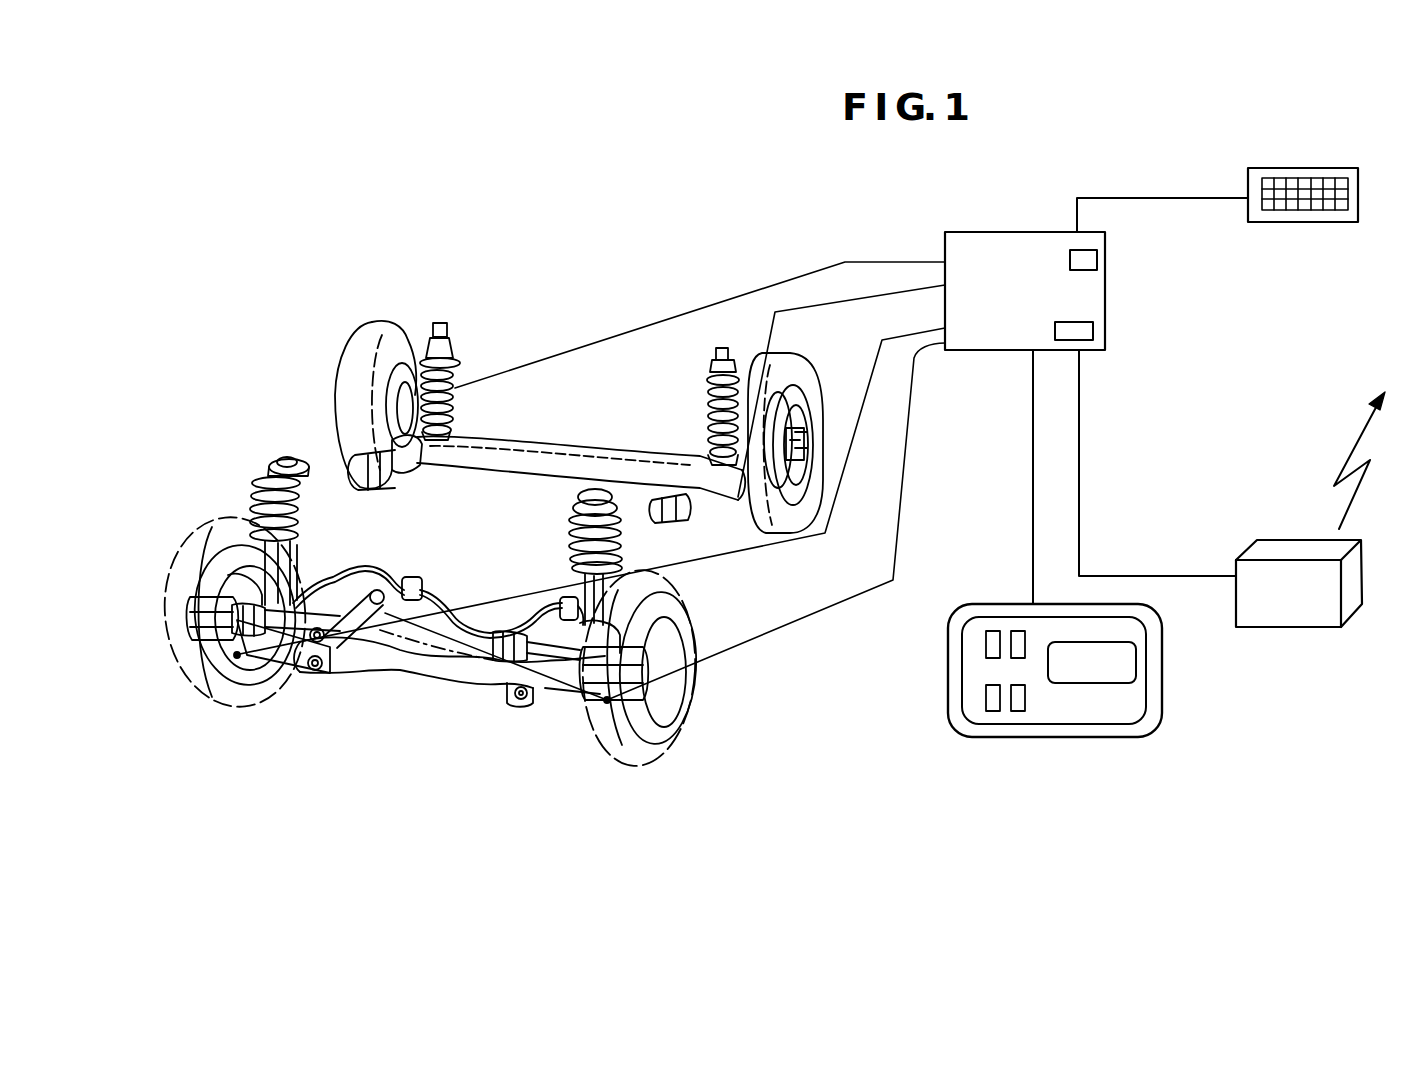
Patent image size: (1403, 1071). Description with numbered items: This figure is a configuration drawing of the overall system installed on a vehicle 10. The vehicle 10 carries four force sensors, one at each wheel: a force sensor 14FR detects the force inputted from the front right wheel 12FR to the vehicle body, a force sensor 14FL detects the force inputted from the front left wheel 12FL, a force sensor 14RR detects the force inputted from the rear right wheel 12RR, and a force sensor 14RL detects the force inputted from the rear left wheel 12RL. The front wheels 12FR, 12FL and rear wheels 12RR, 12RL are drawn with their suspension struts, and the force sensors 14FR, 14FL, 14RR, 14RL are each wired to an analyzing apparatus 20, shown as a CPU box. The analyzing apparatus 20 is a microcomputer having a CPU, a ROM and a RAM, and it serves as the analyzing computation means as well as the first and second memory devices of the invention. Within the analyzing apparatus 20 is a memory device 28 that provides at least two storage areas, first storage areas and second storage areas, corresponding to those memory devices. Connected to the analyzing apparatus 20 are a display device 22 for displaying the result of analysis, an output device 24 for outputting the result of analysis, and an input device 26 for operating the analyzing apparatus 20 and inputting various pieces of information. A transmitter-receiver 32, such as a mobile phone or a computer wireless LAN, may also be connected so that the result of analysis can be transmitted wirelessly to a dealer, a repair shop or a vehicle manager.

The vehicle 10 is at (524, 170).
The front right wheel 12FR is at (175, 680).
The front left wheel 12FL is at (622, 768).
The rear right wheel 12RR is at (336, 350).
The rear left wheel 12RL is at (858, 340).
The force sensor 14FR is at (237, 655).
The force sensor 14FL is at (578, 575).
The force sensor 14RR is at (400, 320).
The force sensor 14RL is at (707, 405).
The analyzing apparatus 20 is at (988, 232).
The display device 22 is at (1036, 737).
The output device 24 is at (1094, 331).
The input device 26 is at (1287, 168).
The memory device 28 is at (1098, 261).
The transmitter-receiver 32 is at (1291, 628).